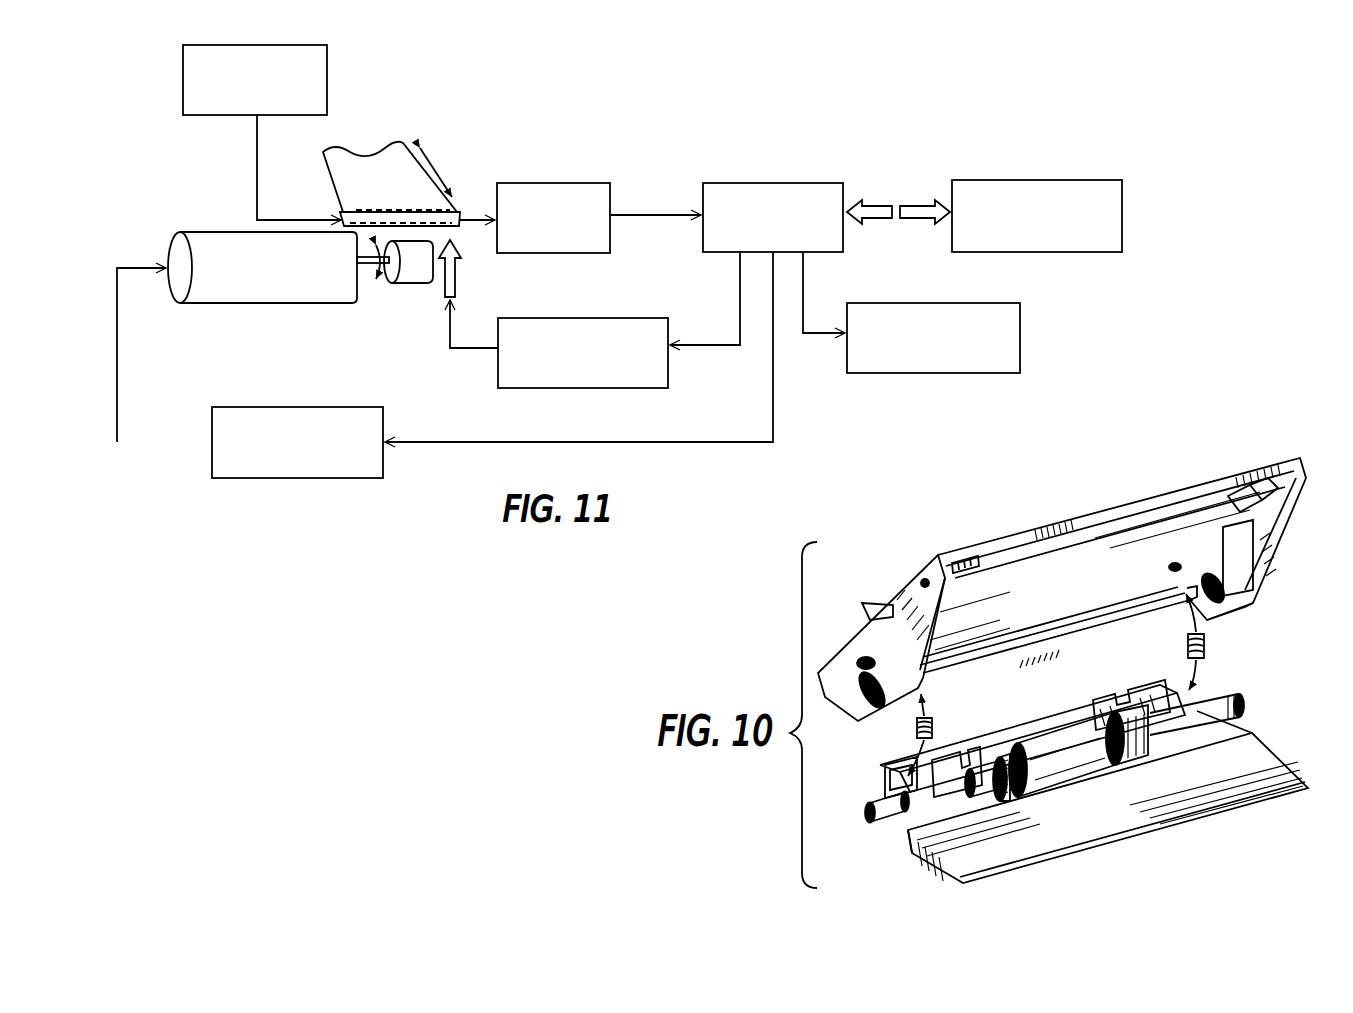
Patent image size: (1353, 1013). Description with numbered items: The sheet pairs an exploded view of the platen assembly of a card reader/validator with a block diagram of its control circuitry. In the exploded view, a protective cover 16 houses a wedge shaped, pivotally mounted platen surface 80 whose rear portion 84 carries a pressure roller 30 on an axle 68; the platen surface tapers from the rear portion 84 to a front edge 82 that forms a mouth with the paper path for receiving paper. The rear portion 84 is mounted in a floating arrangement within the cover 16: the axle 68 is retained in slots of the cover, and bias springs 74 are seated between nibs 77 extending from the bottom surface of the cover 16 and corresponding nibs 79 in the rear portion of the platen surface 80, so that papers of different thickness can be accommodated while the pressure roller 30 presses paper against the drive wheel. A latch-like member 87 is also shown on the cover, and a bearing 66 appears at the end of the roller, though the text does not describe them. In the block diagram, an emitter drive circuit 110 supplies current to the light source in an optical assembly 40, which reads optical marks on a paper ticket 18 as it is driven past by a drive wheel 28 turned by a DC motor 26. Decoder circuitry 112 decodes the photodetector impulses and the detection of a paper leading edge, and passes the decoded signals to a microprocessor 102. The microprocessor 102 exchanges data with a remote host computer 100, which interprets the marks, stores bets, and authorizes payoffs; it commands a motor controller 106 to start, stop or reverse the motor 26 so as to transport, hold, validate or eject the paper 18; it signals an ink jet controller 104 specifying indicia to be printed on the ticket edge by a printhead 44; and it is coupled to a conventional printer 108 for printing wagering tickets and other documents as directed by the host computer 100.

In FIG. 11, the emitter drive circuit 110 is at (327, 75).
In FIG. 11, the paper ticket 18 is at (372, 170).
In FIG. 11, the optical assembly 40 is at (455, 214).
In FIG. 11, the decoder circuitry 112 is at (556, 183).
In FIG. 11, the microprocessor 102 is at (785, 183).
In FIG. 11, the host computer 100 is at (1036, 180).
In FIG. 11, the DC motor 26 is at (225, 228).
In FIG. 11, the drive wheel 28 is at (406, 288).
In FIG. 11, the printhead 44 is at (455, 288).
In FIG. 11, the ink jet controller 104 is at (550, 318).
In FIG. 11, the printer 108 is at (918, 373).
In FIG. 11, the motor controller 106 is at (322, 478).
In FIG. 10, the cover 16 is at (1046, 525).
In FIG. 10, the latch 87 is at (1256, 497).
In FIG. 10, the nibs 77 is at (1170, 570).
In FIG. 10, the bias springs 74 is at (935, 722).
In FIG. 10, the nibs 79 is at (884, 793).
In FIG. 10, the axle 68 is at (1240, 702).
In FIG. 10, the pressure roller 30 is at (1045, 740).
In FIG. 10, the bearing 66 is at (999, 762).
In FIG. 10, the rear portion 84 is at (885, 768).
In FIG. 10, the platen surface 80 is at (1080, 833).
In FIG. 10, the front edge 82 is at (1142, 835).